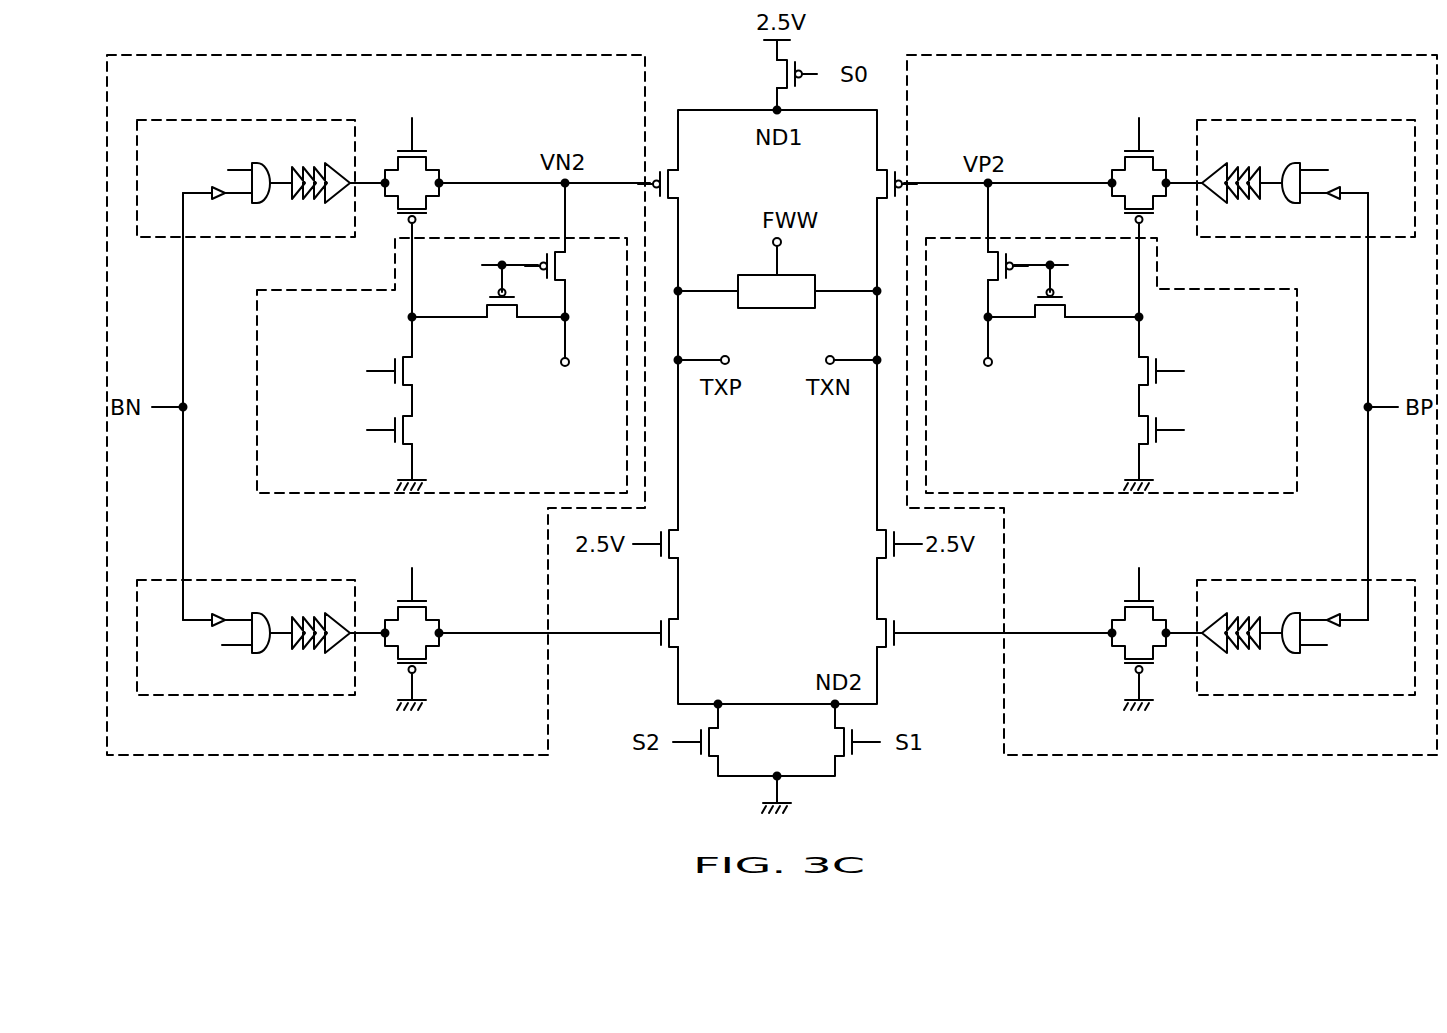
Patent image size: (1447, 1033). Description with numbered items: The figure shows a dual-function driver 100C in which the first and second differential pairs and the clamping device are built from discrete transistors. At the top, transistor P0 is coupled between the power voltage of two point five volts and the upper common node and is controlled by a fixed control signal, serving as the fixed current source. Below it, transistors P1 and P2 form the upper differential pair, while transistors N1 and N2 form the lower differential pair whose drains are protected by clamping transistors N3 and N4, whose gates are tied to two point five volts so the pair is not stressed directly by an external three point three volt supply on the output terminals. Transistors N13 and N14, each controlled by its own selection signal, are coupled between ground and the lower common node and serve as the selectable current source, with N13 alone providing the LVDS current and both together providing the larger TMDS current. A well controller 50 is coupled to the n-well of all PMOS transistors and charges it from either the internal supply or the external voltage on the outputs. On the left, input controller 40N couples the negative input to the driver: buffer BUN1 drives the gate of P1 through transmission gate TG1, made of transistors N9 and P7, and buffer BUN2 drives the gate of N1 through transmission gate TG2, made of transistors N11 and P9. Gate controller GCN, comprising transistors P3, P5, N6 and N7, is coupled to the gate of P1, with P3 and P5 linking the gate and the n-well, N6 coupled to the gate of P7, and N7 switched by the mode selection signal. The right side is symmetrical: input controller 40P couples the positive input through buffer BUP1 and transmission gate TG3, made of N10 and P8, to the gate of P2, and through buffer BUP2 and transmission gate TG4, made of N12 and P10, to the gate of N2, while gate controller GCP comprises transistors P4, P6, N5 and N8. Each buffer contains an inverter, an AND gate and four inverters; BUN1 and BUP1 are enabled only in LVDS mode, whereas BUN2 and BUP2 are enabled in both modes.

The dual-function driver 100C is at (567, 800).
The input controller 40N is at (110, 55).
The input controller 40P is at (910, 55).
The buffer BUN1 is at (140, 118).
The buffer BUN2 is at (140, 698).
The buffer BUP1 is at (1412, 118).
The buffer BUP2 is at (1412, 698).
The gate controller GCN is at (268, 497).
The gate controller GCP is at (1285, 497).
The transmission gate TG1 is at (522, 140).
The transmission gate TG2 is at (488, 658).
The transmission gate TG3 is at (1063, 163).
The transmission gate TG4 is at (1066, 658).
The well controller 50 is at (800, 275).
The transistor P0 is at (777, 74).
The transistor P1 is at (677, 184).
The transistor P2 is at (876, 184).
The transistor P3 is at (562, 266).
The transistor P4 is at (990, 266).
The transistor P5 is at (502, 323).
The transistor P6 is at (1050, 323).
The transistor P7 is at (430, 215).
The transistor P8 is at (1122, 215).
The transistor P9 is at (430, 664).
The transistor P10 is at (1115, 664).
The transistor N1 is at (677, 633).
The transistor N2 is at (877, 633).
The transistor N3 is at (677, 544).
The transistor N4 is at (877, 544).
The transistor N5 is at (1139, 371).
The transistor N6 is at (409, 371).
The transistor N7 is at (409, 430).
The transistor N8 is at (1139, 430).
The transistor N9 is at (431, 154).
The transistor N10 is at (1113, 154).
The transistor N11 is at (438, 604).
The transistor N12 is at (1111, 604).
The transistor N13 is at (723, 742).
The transistor N14 is at (832, 742).